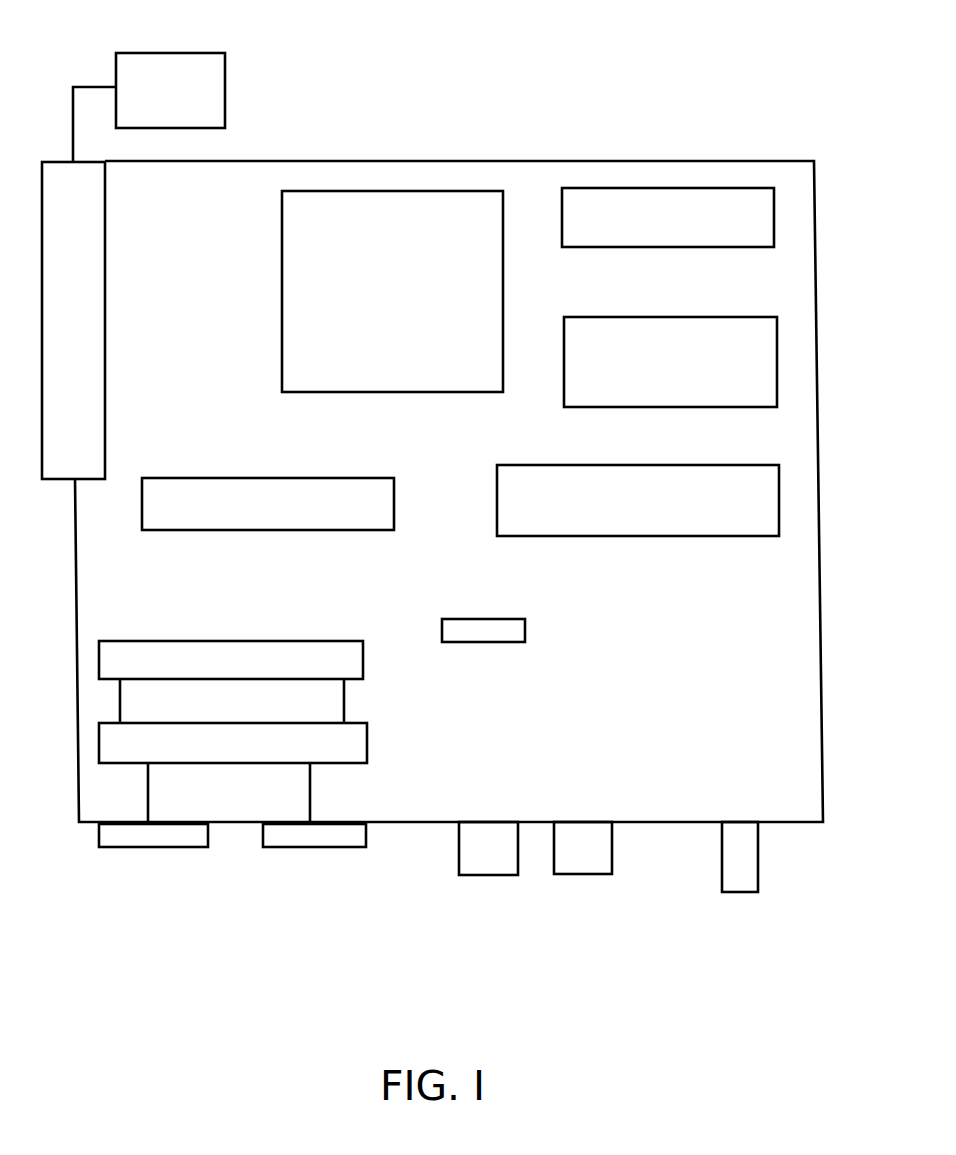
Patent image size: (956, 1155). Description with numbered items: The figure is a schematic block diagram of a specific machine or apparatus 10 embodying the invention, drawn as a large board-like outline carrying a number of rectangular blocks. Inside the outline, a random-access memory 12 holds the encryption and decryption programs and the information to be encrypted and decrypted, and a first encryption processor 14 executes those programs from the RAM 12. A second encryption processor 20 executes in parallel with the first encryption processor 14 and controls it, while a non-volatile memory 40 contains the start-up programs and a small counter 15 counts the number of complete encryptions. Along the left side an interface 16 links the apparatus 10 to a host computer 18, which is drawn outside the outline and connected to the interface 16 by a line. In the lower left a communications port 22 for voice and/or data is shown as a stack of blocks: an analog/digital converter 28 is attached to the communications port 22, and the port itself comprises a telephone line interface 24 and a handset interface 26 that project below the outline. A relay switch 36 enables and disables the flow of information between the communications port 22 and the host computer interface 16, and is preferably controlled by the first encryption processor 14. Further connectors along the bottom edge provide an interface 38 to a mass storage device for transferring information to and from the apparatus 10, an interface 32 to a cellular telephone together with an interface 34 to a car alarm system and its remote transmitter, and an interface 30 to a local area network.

The apparatus 10 is at (747, 151).
The random-access memory 12 is at (478, 191).
The first encryption processor 14 is at (733, 317).
The counter 15 is at (484, 643).
The interface 16 is at (52, 162).
The host computer 18 is at (226, 89).
The second encryption processor 20 is at (740, 464).
The communications port 22 is at (368, 740).
The telephone line interface 24 is at (97, 838).
The handset interface 26 is at (367, 836).
The analog/digital converter 28 is at (232, 640).
The interface 30 is at (759, 862).
The interface 32 is at (598, 875).
The interface 34 is at (584, 875).
The relay switch 36 is at (395, 494).
The interface 38 is at (458, 860).
The non-volatile memory 40 is at (776, 214).